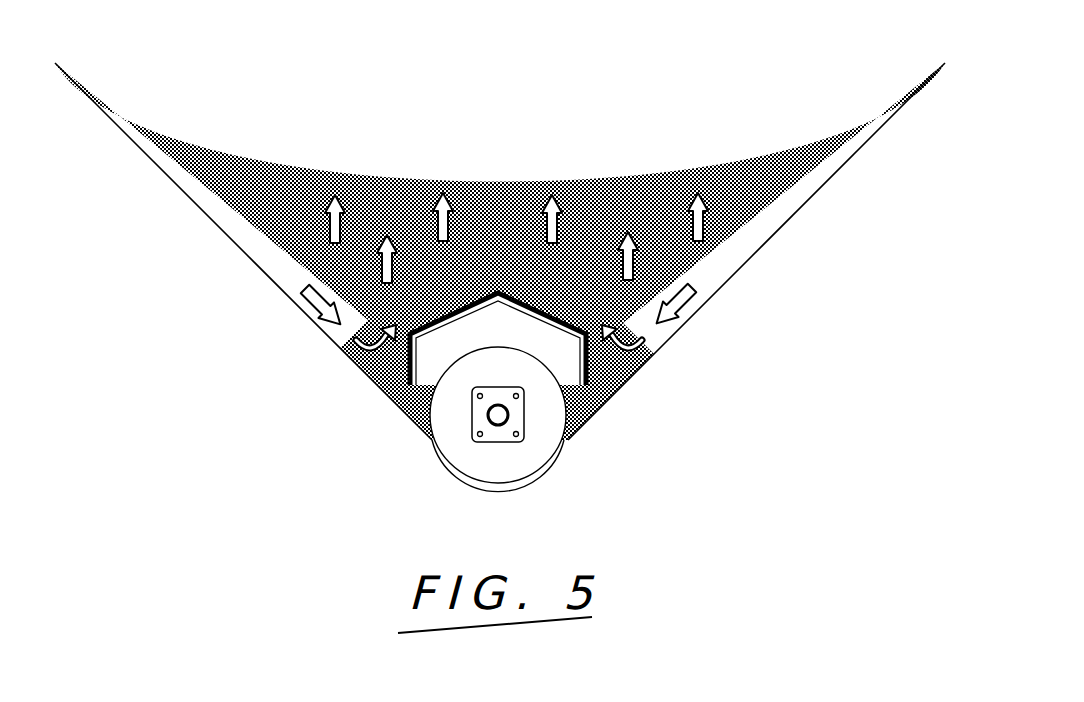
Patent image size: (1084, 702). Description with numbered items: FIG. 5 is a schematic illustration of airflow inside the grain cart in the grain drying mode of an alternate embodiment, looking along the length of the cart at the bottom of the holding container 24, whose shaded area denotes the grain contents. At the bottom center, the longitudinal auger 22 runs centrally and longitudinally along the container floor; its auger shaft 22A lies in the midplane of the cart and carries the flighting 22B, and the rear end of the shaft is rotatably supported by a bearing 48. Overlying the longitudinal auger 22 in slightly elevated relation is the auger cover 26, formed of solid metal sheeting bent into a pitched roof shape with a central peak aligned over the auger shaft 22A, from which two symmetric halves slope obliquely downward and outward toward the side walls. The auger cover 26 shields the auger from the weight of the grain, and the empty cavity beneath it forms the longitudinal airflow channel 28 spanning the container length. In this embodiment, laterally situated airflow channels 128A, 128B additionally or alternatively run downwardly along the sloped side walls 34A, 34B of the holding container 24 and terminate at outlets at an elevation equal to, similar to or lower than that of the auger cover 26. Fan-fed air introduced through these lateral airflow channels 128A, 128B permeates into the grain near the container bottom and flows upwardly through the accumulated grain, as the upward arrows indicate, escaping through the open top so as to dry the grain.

The holding container 24 is at (146, 172).
The sloped side wall 34A is at (202, 212).
The sloped side wall 34B is at (793, 212).
The lateral airflow channel 128A is at (253, 253).
The lateral airflow channel 128B is at (725, 262).
The longitudinal airflow channel 28 is at (517, 346).
The auger cover 26 is at (596, 370).
The longitudinal auger 22 is at (468, 457).
The auger shaft 22A is at (489, 419).
The flighting 22B is at (507, 466).
The bearing 48 is at (506, 421).